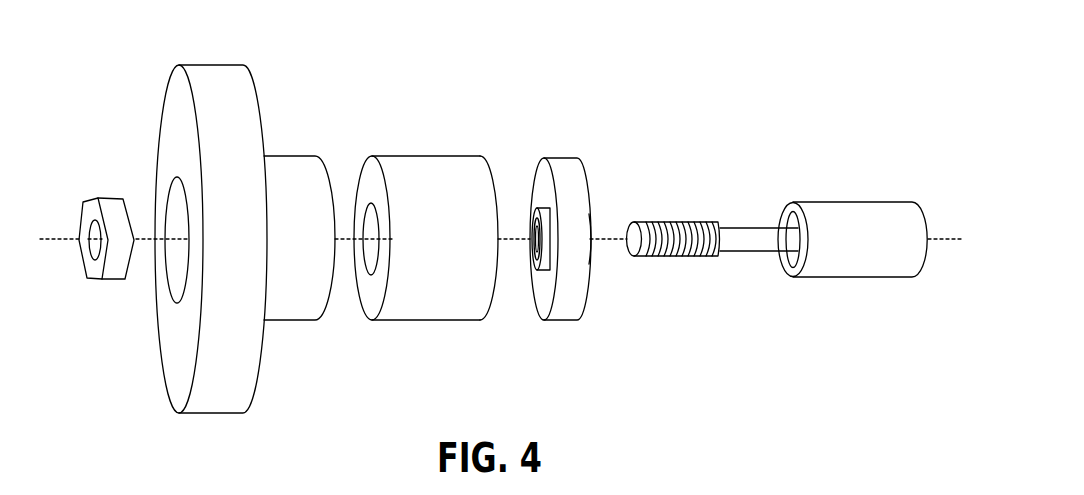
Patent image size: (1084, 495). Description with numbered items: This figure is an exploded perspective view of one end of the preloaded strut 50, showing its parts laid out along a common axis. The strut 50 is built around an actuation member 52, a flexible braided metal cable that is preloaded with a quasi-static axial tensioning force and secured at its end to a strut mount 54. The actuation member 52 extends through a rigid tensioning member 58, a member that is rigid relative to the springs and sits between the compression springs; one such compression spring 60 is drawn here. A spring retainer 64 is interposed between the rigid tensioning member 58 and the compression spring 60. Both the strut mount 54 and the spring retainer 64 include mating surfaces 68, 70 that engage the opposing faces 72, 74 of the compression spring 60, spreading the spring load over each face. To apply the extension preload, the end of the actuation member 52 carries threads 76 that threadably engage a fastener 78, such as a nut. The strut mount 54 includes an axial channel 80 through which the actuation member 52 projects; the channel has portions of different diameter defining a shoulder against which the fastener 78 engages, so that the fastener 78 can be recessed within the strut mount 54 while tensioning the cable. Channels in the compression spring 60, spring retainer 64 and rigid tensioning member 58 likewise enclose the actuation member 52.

The strut 50 is at (124, 117).
The actuation member 52 is at (768, 227).
The strut mount 54 is at (199, 403).
The rigid tensioning member 58 is at (847, 268).
The compression spring 60 is at (426, 261).
The spring retainer 64 is at (557, 157).
The mating surface 68 is at (329, 294).
The mating surface 70 is at (543, 190).
The opposing face 72 is at (372, 175).
The opposing face 74 is at (491, 302).
The threads 76 is at (696, 222).
The fastener 78 is at (113, 198).
The axial channel 80 is at (173, 196).